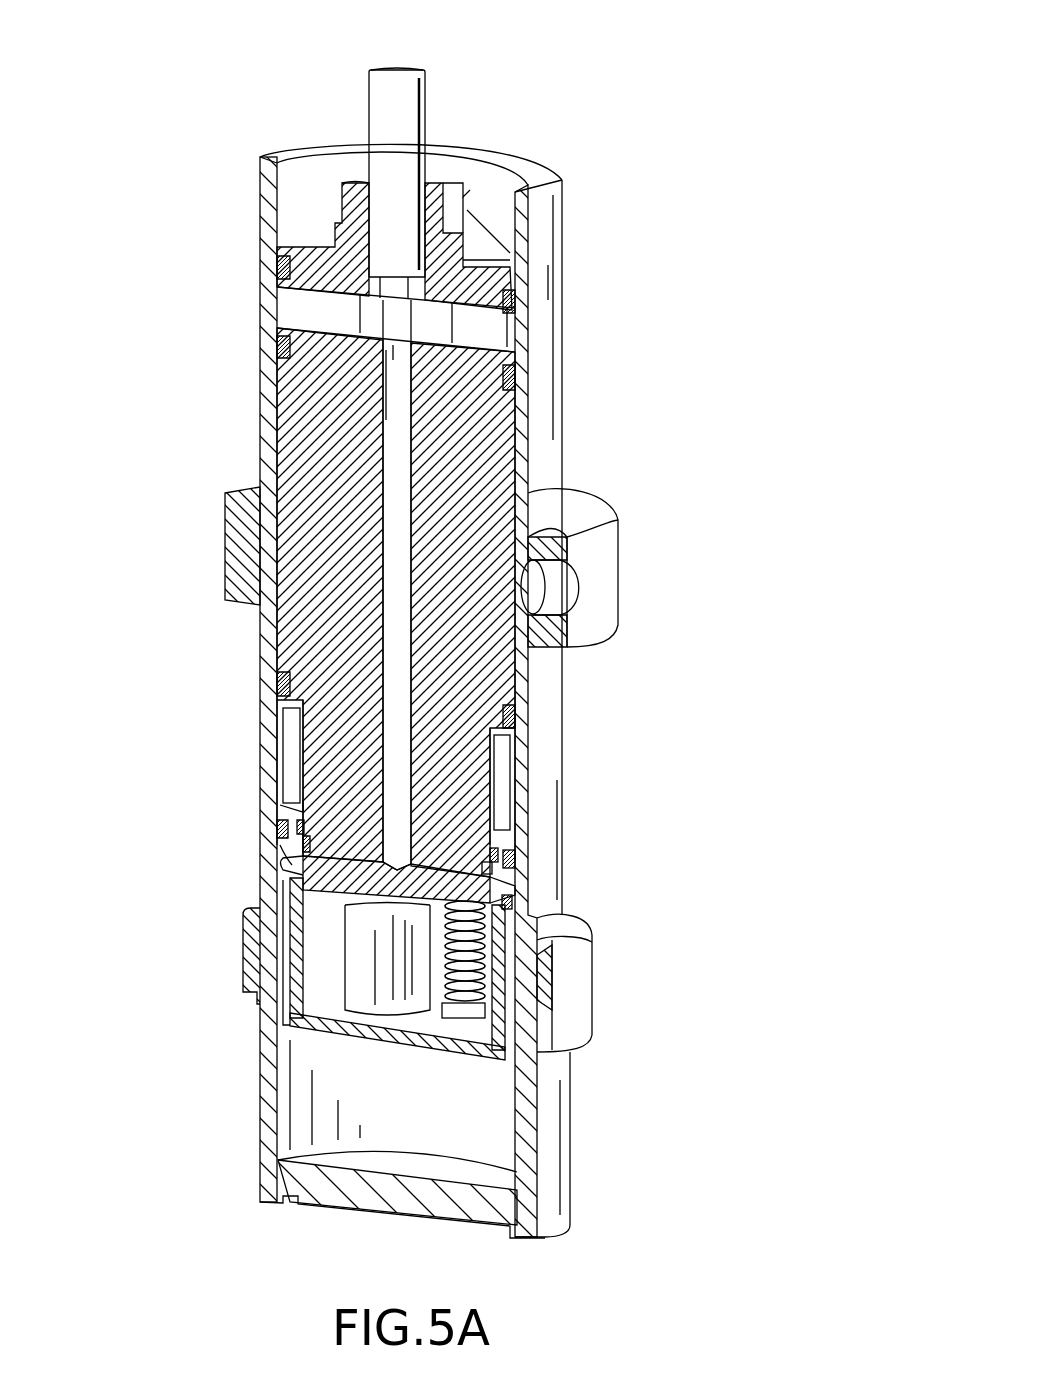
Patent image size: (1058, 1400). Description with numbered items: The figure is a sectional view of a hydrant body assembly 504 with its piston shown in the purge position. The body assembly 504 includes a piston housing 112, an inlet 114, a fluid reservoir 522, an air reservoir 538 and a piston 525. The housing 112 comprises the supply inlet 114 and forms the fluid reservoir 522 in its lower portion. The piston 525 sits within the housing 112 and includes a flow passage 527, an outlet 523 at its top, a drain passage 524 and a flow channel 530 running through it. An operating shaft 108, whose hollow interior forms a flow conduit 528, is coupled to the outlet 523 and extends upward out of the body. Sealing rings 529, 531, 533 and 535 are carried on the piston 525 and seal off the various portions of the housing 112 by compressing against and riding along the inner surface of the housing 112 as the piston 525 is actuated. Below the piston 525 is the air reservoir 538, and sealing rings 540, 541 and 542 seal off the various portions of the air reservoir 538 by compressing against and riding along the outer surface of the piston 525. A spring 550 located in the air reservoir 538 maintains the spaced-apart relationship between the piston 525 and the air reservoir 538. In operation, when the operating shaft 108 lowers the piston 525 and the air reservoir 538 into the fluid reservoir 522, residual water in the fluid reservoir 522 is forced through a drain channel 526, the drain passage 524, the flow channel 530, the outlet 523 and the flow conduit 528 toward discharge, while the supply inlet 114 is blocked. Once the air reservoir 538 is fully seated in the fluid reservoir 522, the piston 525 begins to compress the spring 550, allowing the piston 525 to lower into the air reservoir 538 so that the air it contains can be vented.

The body assembly 504 is at (700, 115).
The operating shaft 108 is at (428, 104).
The piston housing 112 is at (555, 752).
The inlet 114 is at (575, 582).
The fluid reservoir 522 is at (497, 1127).
The outlet 523 is at (402, 212).
The drain passage 524 is at (348, 855).
The piston 525 is at (500, 418).
The drain channel 526 is at (287, 881).
The flow passage 527 is at (500, 352).
The flow conduit 528 is at (396, 100).
The sealing ring 529 is at (280, 266).
The flow channel 530 is at (405, 663).
The sealing ring 531 is at (280, 345).
The sealing ring 533 is at (280, 684).
The sealing ring 535 is at (280, 826).
The air reservoir 538 is at (490, 940).
The sealing ring 540 is at (498, 879).
The sealing ring 541 is at (512, 903).
The sealing ring 542 is at (495, 858).
The spring 550 is at (510, 998).